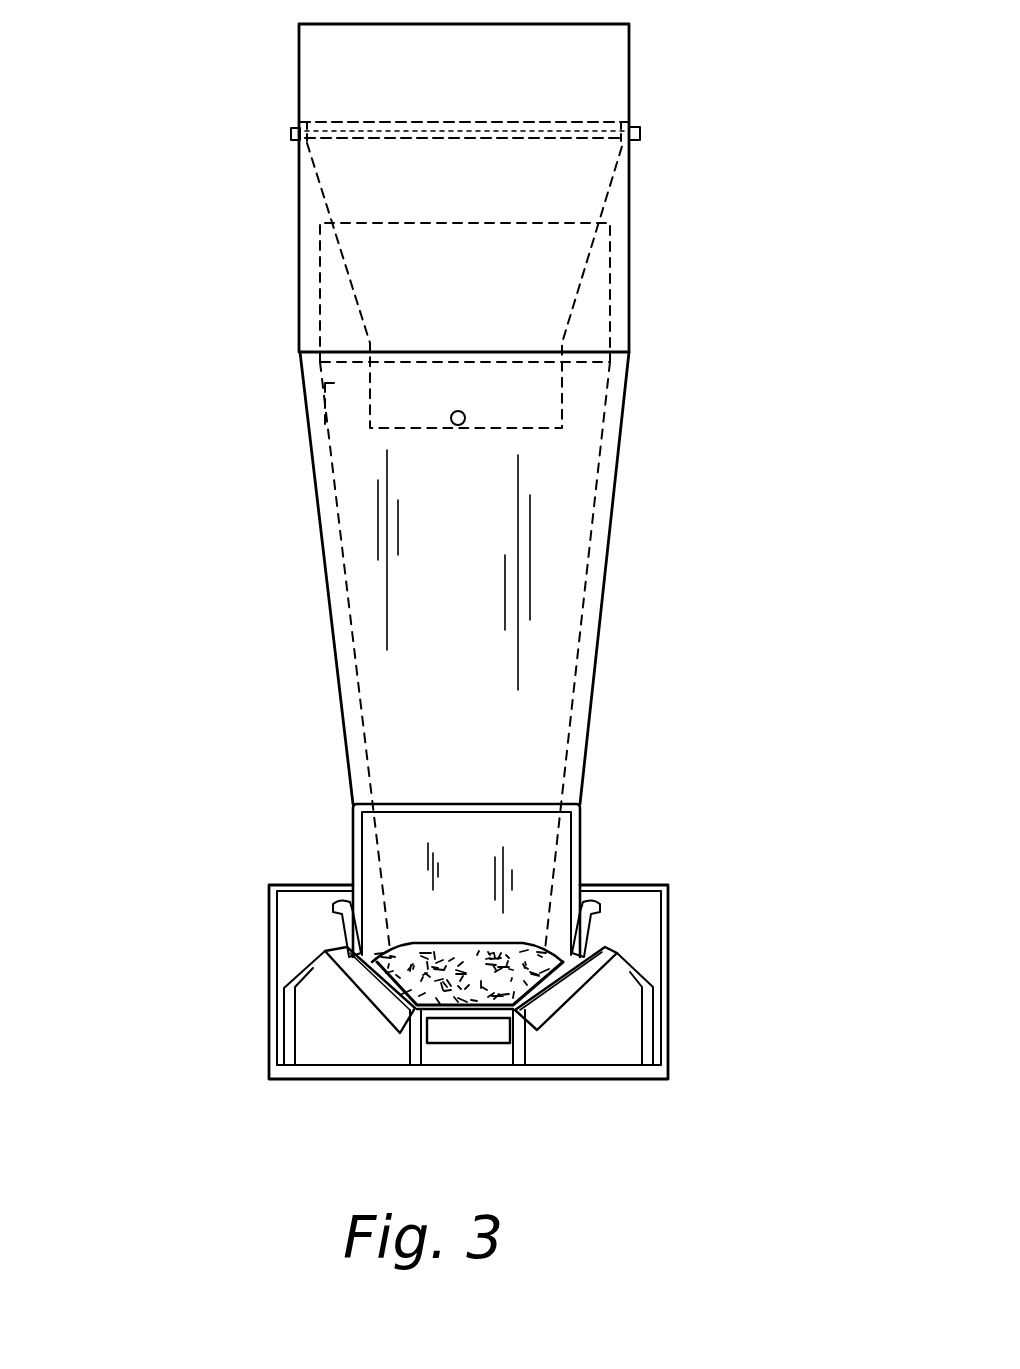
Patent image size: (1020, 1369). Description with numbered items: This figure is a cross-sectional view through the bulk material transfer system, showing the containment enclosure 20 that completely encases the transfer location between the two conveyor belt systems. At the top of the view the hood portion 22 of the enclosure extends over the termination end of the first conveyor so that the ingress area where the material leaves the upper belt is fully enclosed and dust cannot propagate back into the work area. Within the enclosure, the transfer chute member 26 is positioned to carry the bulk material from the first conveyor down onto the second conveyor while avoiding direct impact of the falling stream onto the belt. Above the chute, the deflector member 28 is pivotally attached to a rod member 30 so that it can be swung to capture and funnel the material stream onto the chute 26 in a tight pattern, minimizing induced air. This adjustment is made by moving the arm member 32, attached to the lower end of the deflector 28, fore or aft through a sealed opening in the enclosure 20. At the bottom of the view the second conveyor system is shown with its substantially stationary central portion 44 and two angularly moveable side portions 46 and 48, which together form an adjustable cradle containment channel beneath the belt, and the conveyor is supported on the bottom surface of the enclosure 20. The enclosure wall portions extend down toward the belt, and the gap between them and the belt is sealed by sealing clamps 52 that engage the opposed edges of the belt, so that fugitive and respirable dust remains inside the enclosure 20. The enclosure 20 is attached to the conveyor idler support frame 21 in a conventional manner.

The containment enclosure 20 is at (642, 292).
The conveyor idler support frame 21 is at (685, 1015).
The hood portion 22 is at (630, 60).
The transfer chute member 26 is at (335, 496).
The deflector member 28 is at (348, 388).
The rod member 30 is at (640, 128).
The arm member 32 is at (458, 411).
The central portion 44 is at (470, 1025).
The side portion 46 is at (357, 989).
The side portion 48 is at (570, 985).
The sealing clamp 52 is at (318, 933).